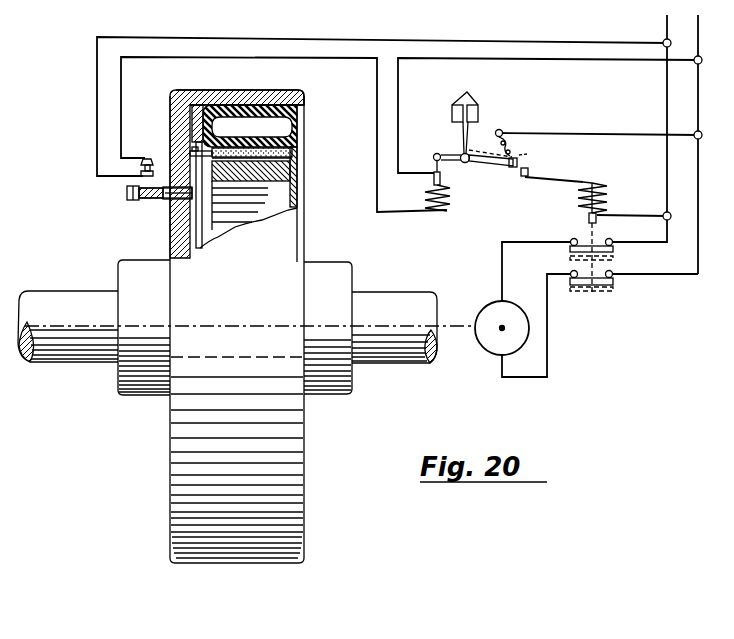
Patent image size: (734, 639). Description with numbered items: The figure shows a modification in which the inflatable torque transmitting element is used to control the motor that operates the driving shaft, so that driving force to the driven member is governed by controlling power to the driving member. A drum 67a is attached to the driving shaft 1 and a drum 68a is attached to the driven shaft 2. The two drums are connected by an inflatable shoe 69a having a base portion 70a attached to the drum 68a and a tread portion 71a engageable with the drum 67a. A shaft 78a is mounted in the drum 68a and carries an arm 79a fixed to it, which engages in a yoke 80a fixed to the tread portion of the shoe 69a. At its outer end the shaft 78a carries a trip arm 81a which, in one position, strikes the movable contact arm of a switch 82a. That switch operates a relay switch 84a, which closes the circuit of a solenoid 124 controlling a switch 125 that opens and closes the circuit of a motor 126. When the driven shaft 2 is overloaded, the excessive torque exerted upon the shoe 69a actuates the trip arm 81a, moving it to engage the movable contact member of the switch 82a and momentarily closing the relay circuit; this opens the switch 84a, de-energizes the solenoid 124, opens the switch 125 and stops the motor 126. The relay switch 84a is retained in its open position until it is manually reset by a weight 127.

The driving shaft 1 is at (388, 300).
The driven shaft 2 is at (65, 291).
The drum 67a is at (293, 200).
The drum 68a is at (277, 100).
The inflatable shoe 69a is at (307, 130).
The base portion 70a is at (252, 92).
The tread portion 71a is at (268, 138).
The shaft 78a is at (172, 205).
The arm 79a is at (190, 157).
The yoke 80a is at (193, 150).
The trip arm 81a is at (145, 207).
The switch 82a is at (138, 177).
The relay switch 84a is at (484, 164).
The solenoid 124 is at (597, 182).
The switch 125 is at (600, 290).
The motor 126 is at (477, 354).
The weight 127 is at (467, 96).